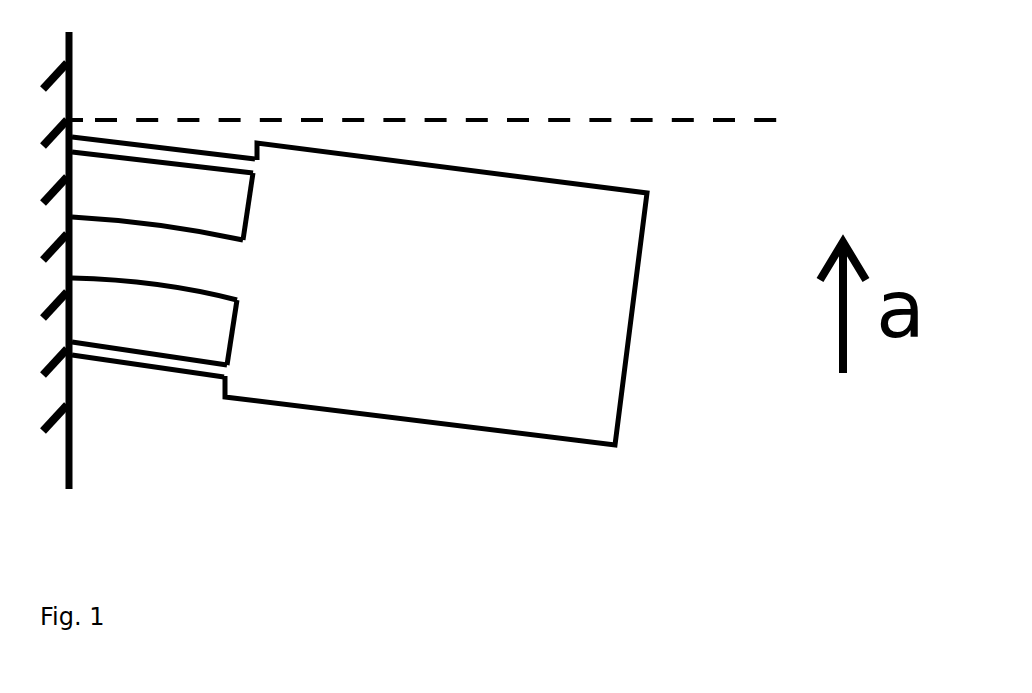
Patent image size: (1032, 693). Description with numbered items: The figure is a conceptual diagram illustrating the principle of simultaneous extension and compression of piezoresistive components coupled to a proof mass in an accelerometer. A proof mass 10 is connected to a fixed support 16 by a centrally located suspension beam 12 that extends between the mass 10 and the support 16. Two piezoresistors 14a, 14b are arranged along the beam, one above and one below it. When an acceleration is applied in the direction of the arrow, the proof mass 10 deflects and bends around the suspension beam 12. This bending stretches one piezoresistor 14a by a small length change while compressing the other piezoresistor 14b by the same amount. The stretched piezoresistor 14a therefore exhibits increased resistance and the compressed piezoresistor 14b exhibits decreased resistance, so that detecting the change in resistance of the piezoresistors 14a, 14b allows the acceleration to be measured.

The proof mass 10 is at (495, 405).
The suspension beam 12 is at (155, 262).
The piezoresistor 14a is at (215, 158).
The piezoresistor 14b is at (197, 368).
The support 16 is at (35, 110).